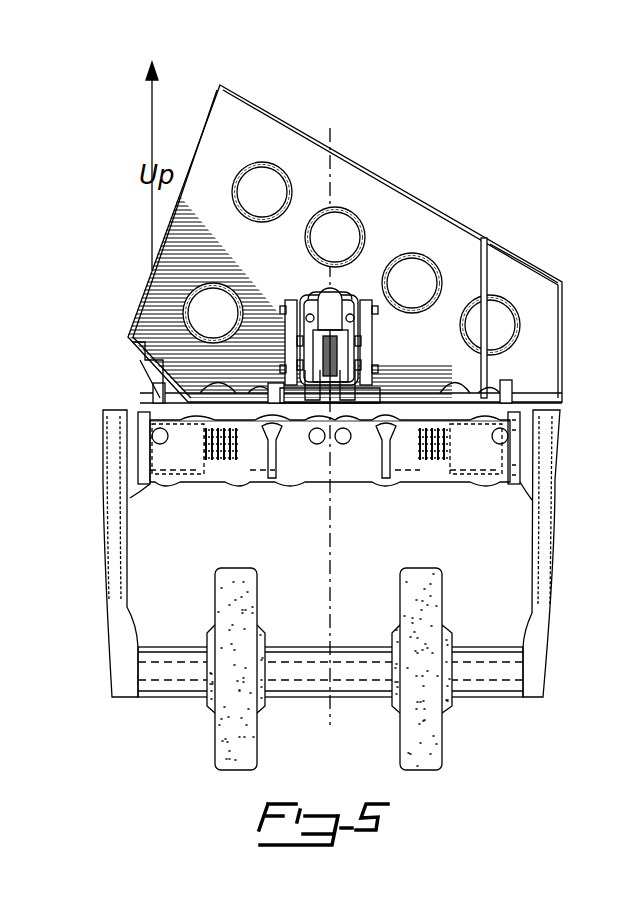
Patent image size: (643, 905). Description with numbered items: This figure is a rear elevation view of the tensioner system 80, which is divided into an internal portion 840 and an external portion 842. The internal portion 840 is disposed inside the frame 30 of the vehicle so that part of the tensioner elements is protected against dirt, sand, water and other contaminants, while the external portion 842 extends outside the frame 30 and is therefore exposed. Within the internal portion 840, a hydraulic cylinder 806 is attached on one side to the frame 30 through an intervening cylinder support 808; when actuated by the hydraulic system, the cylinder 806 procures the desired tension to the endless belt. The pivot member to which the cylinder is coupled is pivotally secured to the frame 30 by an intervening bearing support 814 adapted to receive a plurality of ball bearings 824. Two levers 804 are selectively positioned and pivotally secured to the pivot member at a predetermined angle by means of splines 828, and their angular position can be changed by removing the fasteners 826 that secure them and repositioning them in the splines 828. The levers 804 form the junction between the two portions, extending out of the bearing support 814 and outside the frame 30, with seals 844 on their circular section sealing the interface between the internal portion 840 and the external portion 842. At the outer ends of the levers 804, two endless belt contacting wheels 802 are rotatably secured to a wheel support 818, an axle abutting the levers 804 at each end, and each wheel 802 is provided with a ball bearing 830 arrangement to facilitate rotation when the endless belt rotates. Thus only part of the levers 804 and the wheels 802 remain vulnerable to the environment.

The tensioner system 80 is at (560, 186).
The frame 30 is at (281, 262).
The hydraulic cylinder 806 is at (342, 300).
The cylinder support 808 is at (376, 328).
The internal portion 840 is at (78, 97).
The external portion 842 is at (78, 416).
The seals 844 is at (136, 408).
The ball bearings 824 is at (522, 418).
The splines 828 is at (532, 430).
The bearing support 814 is at (534, 506).
The fasteners 826 is at (418, 497).
The levers 804 is at (130, 566).
The wheel support 818 is at (308, 684).
The ball bearing arrangement 830 is at (237, 566).
The endless belt contacting wheels 802 is at (230, 747).